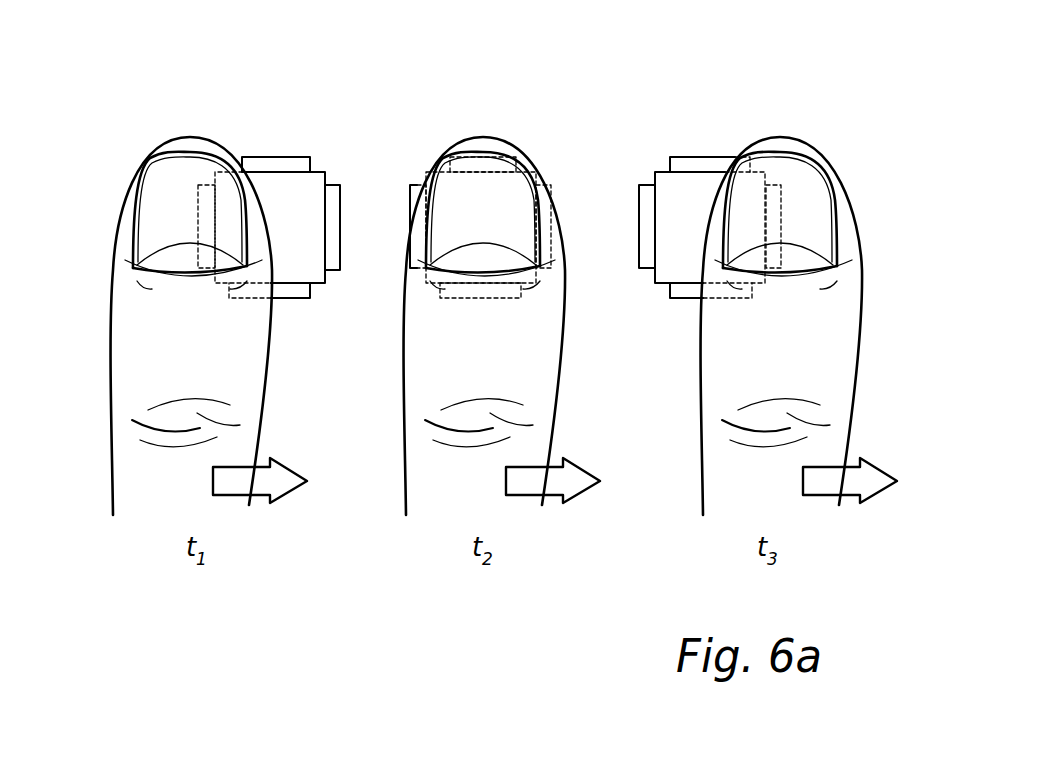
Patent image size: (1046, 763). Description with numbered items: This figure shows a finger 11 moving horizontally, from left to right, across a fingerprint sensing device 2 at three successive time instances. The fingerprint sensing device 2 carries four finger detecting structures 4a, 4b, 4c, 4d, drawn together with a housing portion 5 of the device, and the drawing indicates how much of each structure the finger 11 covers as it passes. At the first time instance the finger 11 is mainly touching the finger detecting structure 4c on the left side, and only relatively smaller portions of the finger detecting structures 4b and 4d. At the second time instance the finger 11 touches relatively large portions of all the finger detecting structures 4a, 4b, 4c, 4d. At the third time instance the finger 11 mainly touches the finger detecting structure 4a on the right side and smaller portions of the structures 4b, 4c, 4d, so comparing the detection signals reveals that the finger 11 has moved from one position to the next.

The fingerprint sensing device 2 is at (221, 102).
The finger detecting structure 4a is at (334, 216).
The finger detecting structure 4b is at (258, 160).
The finger detecting structure 4c is at (198, 200).
The finger detecting structure 4d is at (289, 300).
The housing 5 is at (286, 178).
The finger 11 is at (143, 358).